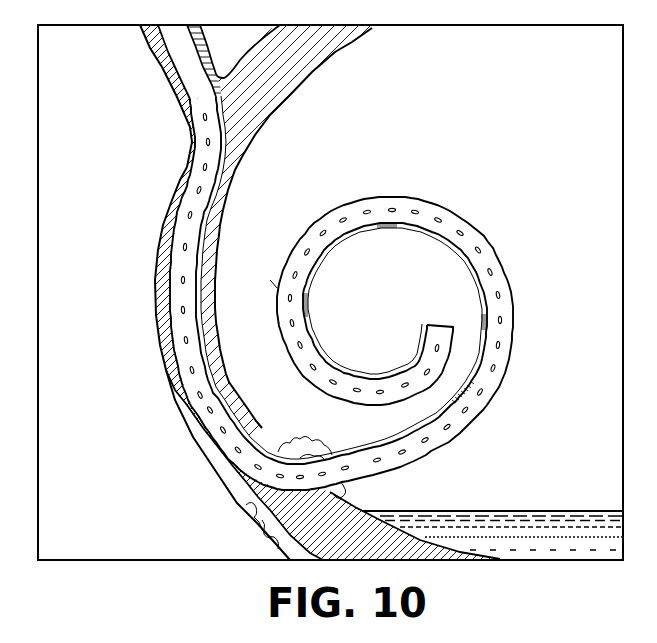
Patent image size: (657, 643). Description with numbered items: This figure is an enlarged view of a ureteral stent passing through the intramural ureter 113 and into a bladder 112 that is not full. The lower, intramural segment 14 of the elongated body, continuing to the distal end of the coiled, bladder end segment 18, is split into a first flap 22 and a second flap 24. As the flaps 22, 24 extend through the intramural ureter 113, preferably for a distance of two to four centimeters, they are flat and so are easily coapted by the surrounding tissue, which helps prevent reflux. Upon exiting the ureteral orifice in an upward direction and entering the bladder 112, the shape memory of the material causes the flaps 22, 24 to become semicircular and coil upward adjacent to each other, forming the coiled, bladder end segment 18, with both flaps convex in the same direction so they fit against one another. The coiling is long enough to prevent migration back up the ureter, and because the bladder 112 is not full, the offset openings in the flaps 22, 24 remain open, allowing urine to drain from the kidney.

The lower, intramural segment 14 is at (207, 181).
The coiled, bladder end segment 18 is at (492, 242).
The first flap 22 is at (317, 273).
The second flap 24 is at (277, 288).
The bladder 112 is at (604, 62).
The intramural ureter 113 is at (137, 333).